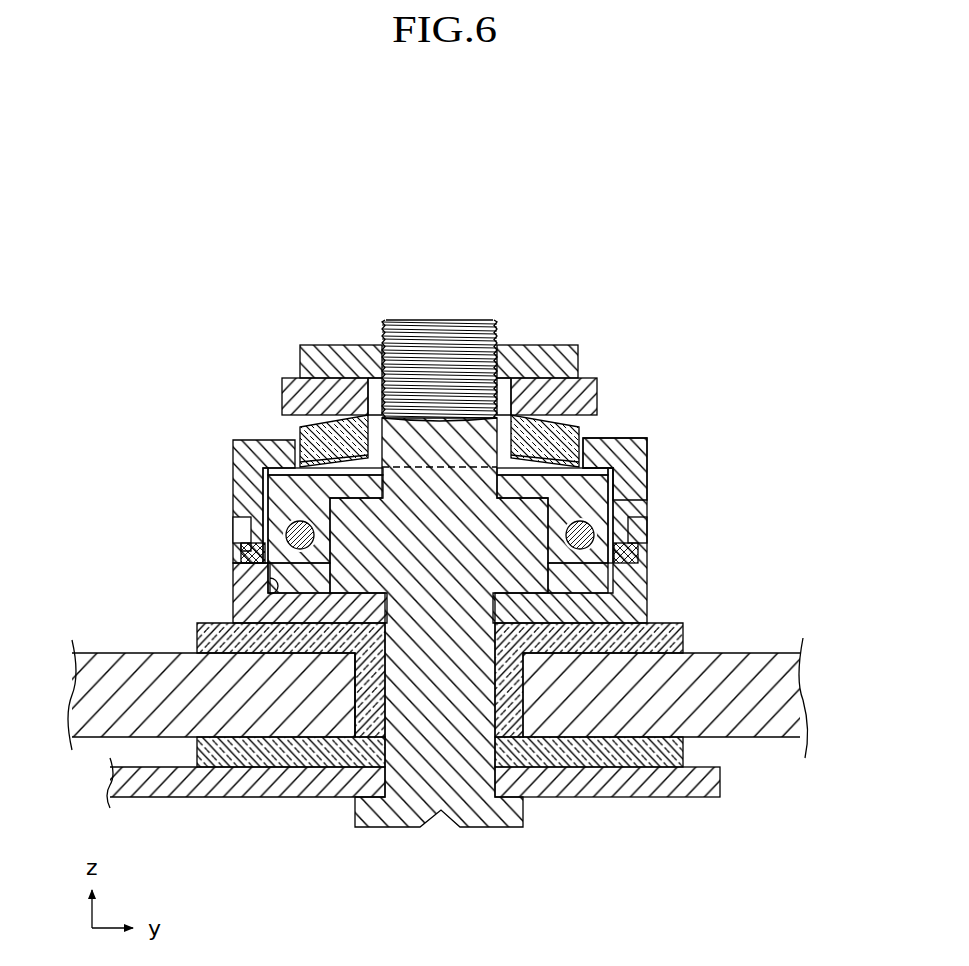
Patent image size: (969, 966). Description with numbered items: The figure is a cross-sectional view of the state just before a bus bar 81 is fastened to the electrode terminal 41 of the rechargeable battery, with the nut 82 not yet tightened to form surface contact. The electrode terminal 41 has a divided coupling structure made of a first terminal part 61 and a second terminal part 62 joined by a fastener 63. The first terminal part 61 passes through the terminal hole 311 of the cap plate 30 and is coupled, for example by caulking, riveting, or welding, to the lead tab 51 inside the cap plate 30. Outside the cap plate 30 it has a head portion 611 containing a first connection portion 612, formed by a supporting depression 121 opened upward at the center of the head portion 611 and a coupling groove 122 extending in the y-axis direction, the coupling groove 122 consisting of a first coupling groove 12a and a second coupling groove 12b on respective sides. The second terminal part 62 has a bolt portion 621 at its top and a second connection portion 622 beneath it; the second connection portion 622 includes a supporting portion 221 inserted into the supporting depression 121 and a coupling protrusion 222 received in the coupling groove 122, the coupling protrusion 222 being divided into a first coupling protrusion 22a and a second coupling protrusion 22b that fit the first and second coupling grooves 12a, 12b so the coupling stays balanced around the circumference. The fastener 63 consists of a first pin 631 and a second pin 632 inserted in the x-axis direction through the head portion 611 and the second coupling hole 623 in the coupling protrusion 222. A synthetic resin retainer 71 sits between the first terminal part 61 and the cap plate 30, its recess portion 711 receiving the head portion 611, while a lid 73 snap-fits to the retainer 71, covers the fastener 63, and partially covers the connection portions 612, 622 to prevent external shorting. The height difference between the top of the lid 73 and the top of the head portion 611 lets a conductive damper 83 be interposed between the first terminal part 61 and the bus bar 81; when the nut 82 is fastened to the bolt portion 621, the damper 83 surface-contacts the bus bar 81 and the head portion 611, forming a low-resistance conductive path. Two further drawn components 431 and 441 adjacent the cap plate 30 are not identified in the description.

The electrode terminal 41 is at (303, 239).
The first terminal part 61 is at (421, 788).
The second terminal part 62 is at (426, 339).
The bolt portion 621 is at (445, 335).
The second connection portion 622 is at (377, 390).
The coupling protrusion 222 is at (304, 498).
The supporting portion 221 is at (298, 447).
The nut 82 is at (519, 352).
The bus bar 81 is at (550, 396).
The damper 83 is at (348, 487).
The head portion 611 is at (293, 455).
The first connection portion 612 is at (599, 450).
The supporting depression 121 is at (538, 489).
The coupling groove 122 is at (566, 554).
The first coupling protrusion 22a is at (276, 497).
The second coupling protrusion 22b is at (592, 490).
The lid 73 is at (626, 455).
The retainer 71 is at (248, 592).
The recess portion 711 is at (267, 610).
The fastener 63 is at (465, 394).
The first pin 631 is at (246, 527).
The second pin 632 is at (636, 528).
The second coupling hole 623 is at (248, 533).
The first coupling groove 12a is at (238, 554).
The second coupling groove 12b is at (634, 555).
The upper bushing 431 is at (684, 630).
The lower bushing 441 is at (634, 762).
The cap plate 30 is at (757, 704).
The terminal hole 311 is at (352, 715).
The lead tab 51 is at (574, 784).